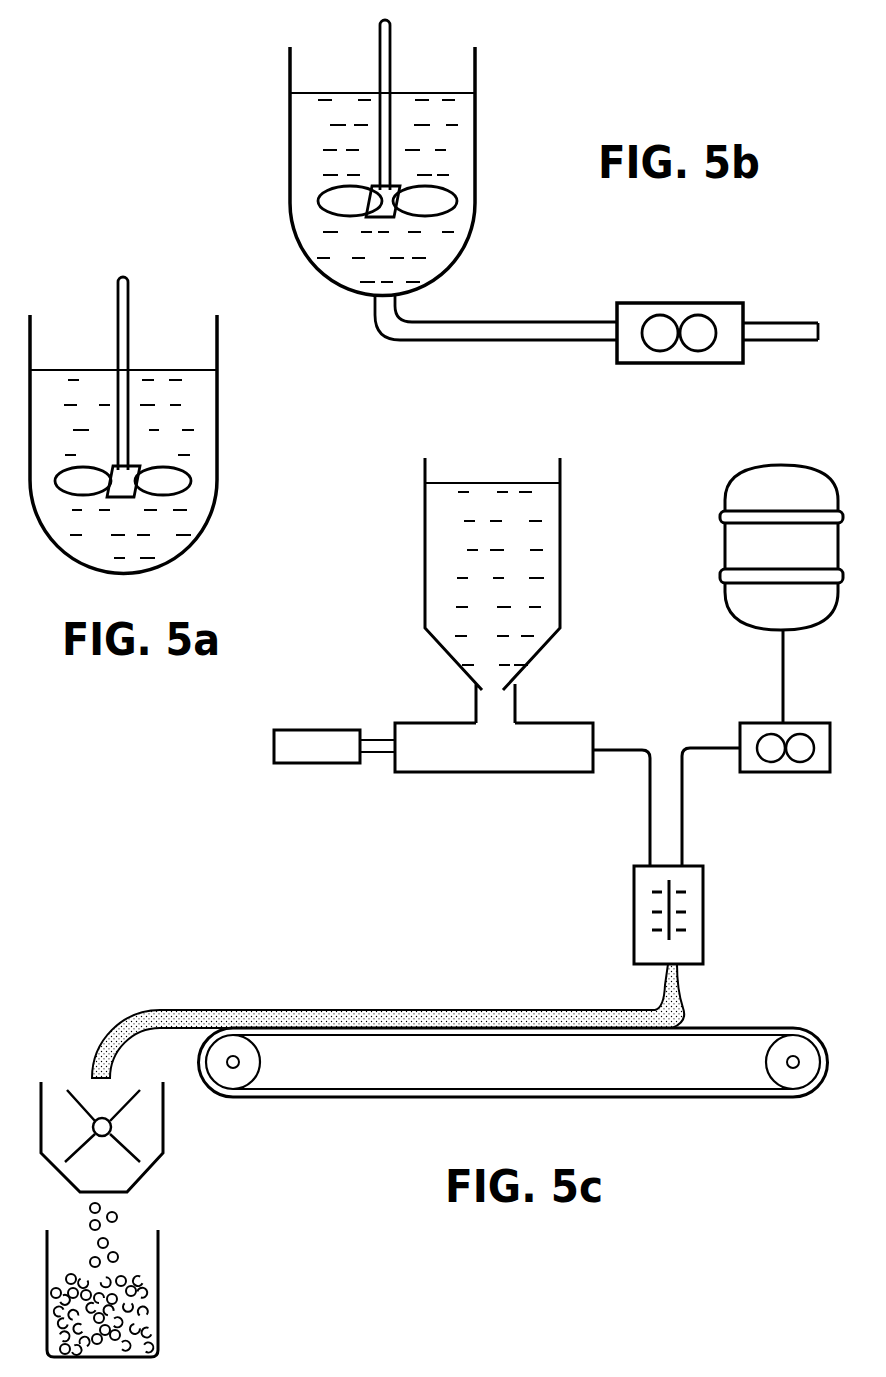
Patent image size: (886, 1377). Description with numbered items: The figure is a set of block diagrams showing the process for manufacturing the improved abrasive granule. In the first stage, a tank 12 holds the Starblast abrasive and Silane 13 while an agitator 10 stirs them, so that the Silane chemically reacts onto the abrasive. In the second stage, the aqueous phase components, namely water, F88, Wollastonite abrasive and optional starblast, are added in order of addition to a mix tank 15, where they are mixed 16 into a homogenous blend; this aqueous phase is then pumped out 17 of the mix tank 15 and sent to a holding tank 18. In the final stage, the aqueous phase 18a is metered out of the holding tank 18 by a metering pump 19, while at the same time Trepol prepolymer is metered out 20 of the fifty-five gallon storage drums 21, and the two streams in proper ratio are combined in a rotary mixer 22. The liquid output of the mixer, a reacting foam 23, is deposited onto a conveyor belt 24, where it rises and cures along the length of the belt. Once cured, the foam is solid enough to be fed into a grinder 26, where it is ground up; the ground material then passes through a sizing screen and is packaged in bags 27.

In FIG. 5a, the agitator 10 is at (130, 311).
In FIG. 5a, the tank 12 is at (219, 432).
In FIG. 5a, the starblast and Silane 13 is at (170, 538).
In FIG. 5b, the mix tank 15 is at (283, 118).
In FIG. 5b, the mixer 16 is at (380, 45).
In FIG. 5b, the pump 17 is at (740, 303).
In FIG. 5c, the holding tank 18 is at (560, 474).
In FIG. 5c, the aqueous phase 18a is at (425, 538).
In FIG. 5c, the metering pump 19 is at (442, 773).
In FIG. 5c, the prepolymer metering pump 20 is at (800, 773).
In FIG. 5c, the storage drums 21 is at (725, 558).
In FIG. 5c, the rotary mixer 22 is at (703, 896).
In FIG. 5c, the reacting foam 23 is at (521, 1008).
In FIG. 5c, the conveyor belt 24 is at (698, 1103).
In FIG. 5c, the grinder 26 is at (148, 1164).
In FIG. 5c, the bags 27 is at (160, 1255).